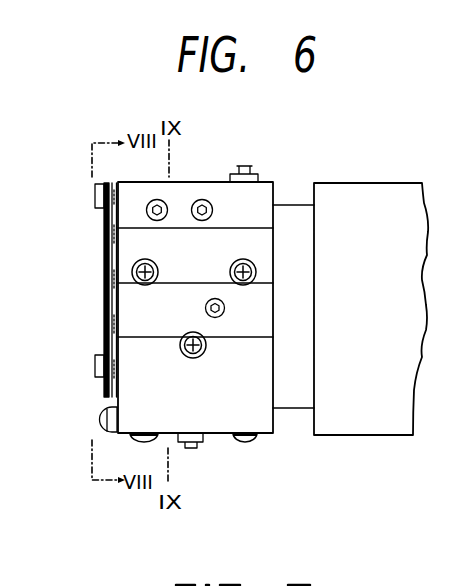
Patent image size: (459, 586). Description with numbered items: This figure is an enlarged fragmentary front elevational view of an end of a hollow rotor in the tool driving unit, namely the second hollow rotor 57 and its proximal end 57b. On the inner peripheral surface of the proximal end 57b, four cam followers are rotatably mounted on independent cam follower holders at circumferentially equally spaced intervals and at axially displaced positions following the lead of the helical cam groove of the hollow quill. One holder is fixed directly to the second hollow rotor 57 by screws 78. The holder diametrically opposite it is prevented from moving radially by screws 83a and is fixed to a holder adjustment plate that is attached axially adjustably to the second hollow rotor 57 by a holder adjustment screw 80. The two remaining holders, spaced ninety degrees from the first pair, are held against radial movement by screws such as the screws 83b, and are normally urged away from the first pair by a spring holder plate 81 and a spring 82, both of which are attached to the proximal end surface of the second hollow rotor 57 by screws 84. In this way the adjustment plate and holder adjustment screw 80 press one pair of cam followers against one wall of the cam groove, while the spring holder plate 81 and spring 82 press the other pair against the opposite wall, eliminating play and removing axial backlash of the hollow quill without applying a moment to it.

The second hollow rotor 57 is at (402, 195).
The proximal end 57b is at (262, 408).
The screws 78 is at (168, 207).
The holder adjustment screw 80 is at (101, 421).
The spring holder plate 81 is at (110, 229).
The spring 82 is at (102, 302).
The screws 83a is at (155, 441).
The screws 83b is at (132, 270).
The screws 84 is at (95, 203).